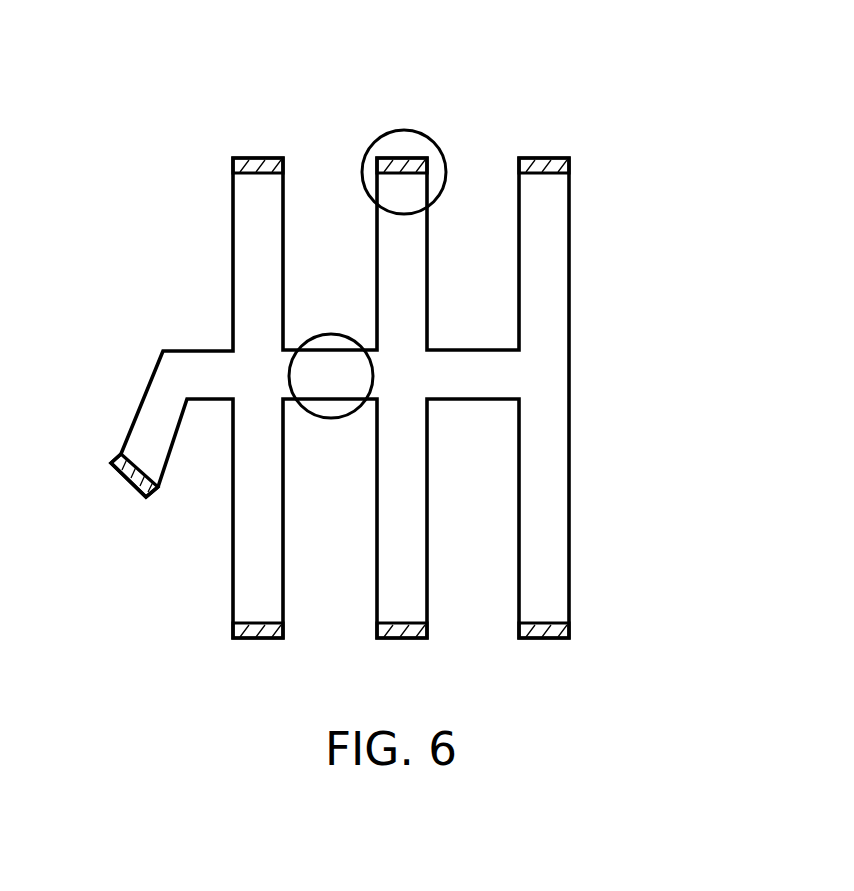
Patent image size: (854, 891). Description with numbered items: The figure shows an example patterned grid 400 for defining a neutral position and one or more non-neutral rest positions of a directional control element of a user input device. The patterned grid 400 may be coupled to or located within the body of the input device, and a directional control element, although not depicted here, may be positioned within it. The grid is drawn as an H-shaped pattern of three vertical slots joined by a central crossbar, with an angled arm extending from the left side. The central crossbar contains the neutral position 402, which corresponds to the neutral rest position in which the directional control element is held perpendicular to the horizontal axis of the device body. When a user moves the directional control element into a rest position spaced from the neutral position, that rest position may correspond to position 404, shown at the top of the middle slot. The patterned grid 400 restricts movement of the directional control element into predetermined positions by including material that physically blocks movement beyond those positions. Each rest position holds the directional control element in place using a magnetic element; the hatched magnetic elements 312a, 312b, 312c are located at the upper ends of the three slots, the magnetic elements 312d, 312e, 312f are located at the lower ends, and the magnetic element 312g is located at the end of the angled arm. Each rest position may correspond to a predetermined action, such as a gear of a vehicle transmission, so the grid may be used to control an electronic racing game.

The patterned grid 400 is at (643, 108).
The neutral position 402 is at (308, 336).
The non-neutral rest position 404 is at (421, 134).
The magnetic element 312a is at (283, 159).
The magnetic element 312b is at (428, 160).
The magnetic element 312c is at (569, 160).
The magnetic element 312d is at (569, 624).
The magnetic element 312e is at (428, 624).
The magnetic element 312f is at (283, 624).
The magnetic element 312g is at (118, 457).